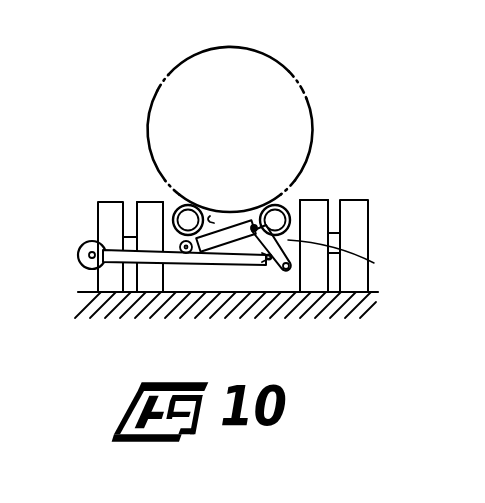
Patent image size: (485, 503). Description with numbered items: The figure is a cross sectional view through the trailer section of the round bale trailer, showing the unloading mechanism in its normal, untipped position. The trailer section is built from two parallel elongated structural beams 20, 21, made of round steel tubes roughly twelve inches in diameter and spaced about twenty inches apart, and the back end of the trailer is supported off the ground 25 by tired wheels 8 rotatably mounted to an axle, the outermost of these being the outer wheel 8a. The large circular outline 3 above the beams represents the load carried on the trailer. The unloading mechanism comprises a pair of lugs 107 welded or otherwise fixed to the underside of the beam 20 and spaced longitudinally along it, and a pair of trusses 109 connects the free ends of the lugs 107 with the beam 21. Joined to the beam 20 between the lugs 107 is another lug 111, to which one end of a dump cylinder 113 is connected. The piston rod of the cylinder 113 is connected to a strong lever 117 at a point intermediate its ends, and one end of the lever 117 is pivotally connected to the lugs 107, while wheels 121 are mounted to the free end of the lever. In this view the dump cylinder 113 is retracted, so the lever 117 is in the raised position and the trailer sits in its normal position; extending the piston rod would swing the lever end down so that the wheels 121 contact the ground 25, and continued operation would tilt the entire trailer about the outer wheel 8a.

The roll 3 is at (252, 48).
The tired wheels 8 is at (112, 209).
The outer wheel 8a is at (362, 222).
The structural beam 20 is at (286, 203).
The structural beam 21 is at (147, 209).
The ground 25 is at (367, 340).
The lugs 107 is at (352, 258).
The trusses 109 is at (212, 223).
The lug 111 is at (250, 236).
The dump cylinder 113 is at (235, 237).
The lever 117 is at (180, 258).
The wheels 121 is at (87, 243).